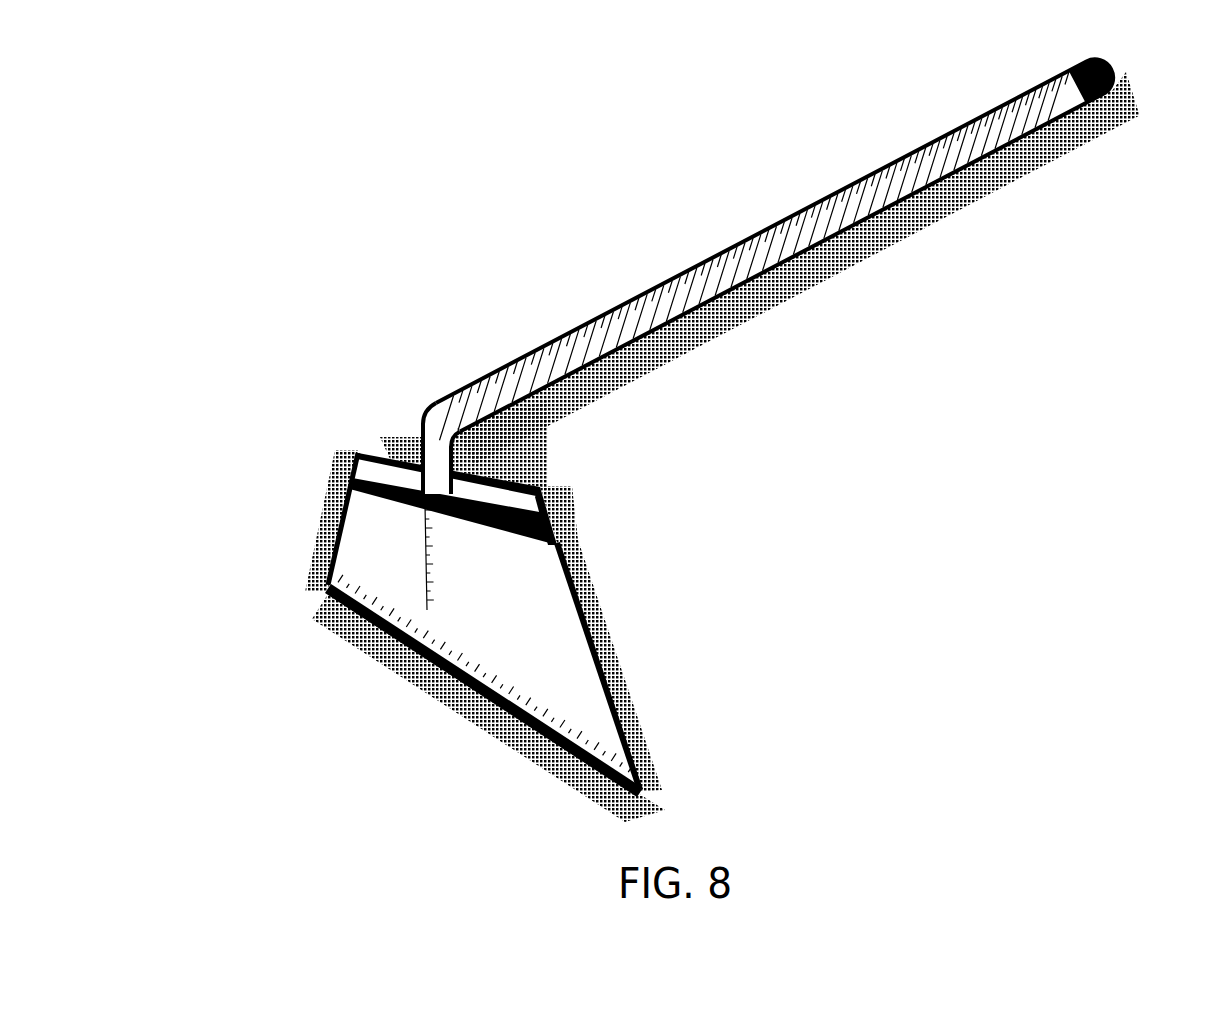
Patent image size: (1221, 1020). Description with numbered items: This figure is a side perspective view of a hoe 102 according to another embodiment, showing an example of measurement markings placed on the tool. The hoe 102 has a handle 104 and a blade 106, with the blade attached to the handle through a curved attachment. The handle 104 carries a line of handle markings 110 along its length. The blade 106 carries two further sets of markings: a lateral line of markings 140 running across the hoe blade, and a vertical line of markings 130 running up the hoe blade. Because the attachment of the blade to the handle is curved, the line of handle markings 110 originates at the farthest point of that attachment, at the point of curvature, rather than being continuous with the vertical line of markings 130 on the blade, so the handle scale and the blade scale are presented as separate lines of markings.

The hoe 102 is at (988, 434).
The handle 104 is at (940, 246).
The blade 106 is at (320, 418).
The handle markings 110 is at (514, 372).
The vertical line of markings 130 is at (578, 605).
The lateral line of markings 140 is at (368, 622).